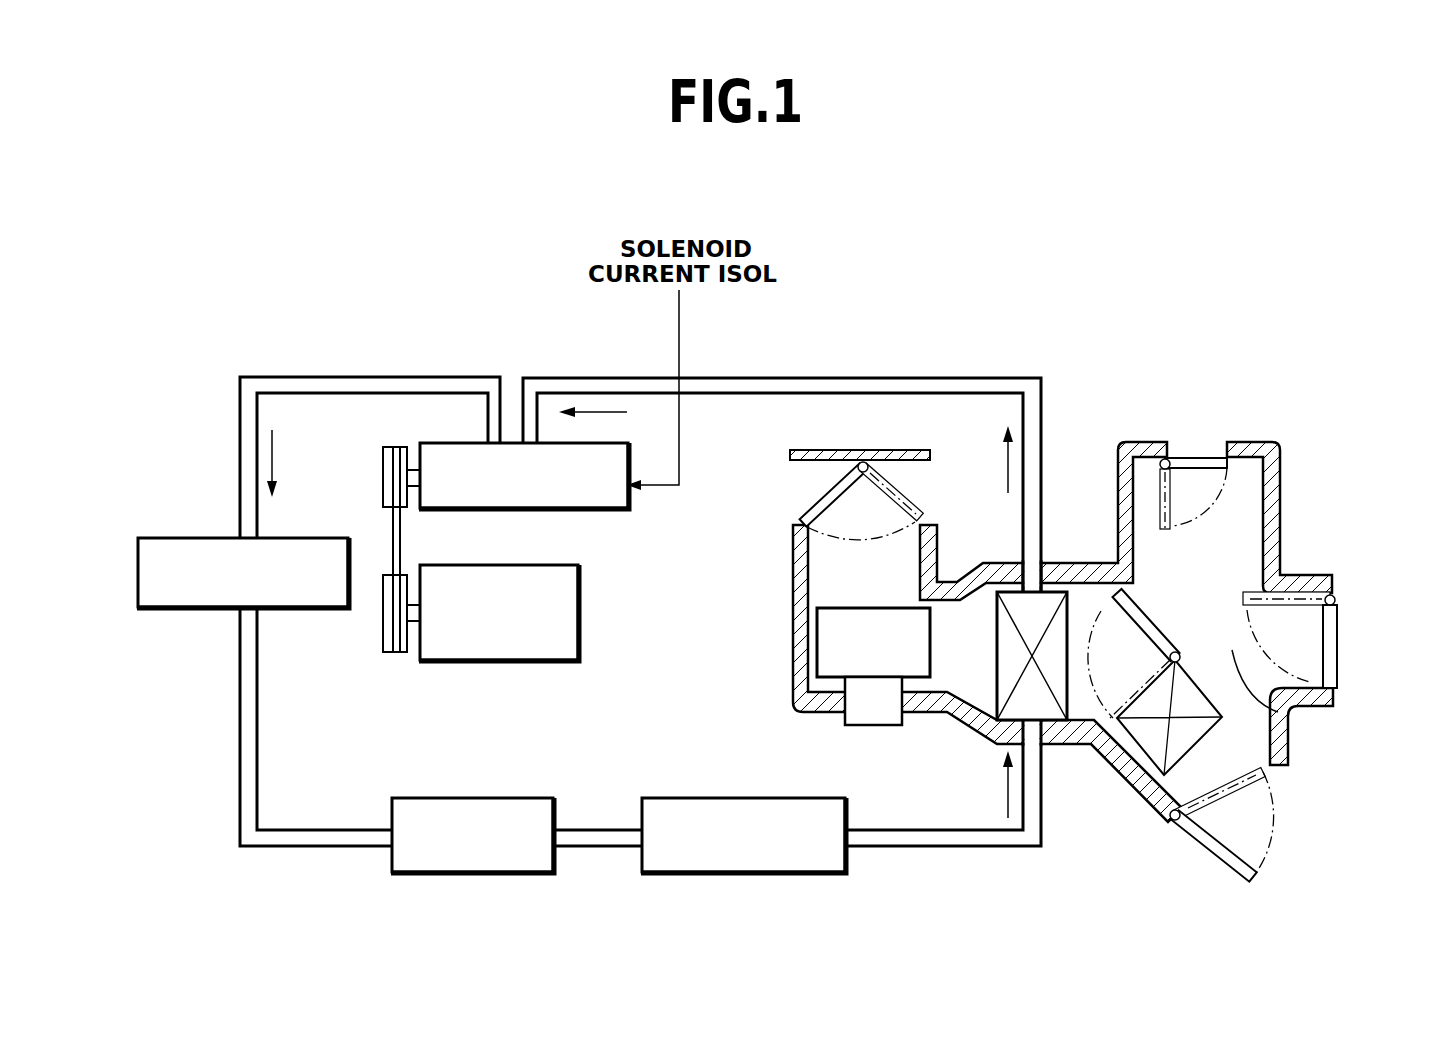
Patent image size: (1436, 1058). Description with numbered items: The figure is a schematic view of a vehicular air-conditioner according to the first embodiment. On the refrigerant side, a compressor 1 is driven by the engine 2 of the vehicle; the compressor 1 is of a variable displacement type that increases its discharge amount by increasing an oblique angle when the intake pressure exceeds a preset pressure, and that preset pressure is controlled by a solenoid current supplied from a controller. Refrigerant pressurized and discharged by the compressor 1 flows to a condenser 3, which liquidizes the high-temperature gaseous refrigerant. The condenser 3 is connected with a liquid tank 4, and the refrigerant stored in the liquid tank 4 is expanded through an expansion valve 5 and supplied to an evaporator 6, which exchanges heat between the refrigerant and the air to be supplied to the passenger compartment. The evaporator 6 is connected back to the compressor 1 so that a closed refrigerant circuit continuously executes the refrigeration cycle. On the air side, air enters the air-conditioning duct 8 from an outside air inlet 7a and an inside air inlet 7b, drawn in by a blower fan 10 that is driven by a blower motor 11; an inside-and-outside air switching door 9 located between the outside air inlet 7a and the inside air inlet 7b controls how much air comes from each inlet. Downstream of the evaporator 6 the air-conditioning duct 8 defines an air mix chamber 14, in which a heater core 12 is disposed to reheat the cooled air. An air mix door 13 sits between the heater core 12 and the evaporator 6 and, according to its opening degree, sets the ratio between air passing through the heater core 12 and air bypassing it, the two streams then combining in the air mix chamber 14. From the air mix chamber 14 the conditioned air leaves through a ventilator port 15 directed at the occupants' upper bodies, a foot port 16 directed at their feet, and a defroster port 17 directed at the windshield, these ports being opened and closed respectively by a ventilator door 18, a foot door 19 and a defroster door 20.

The compressor 1 is at (629, 466).
The engine 2 is at (579, 625).
The condenser 3 is at (163, 609).
The liquid tank 4 is at (505, 874).
The expansion valve 5 is at (745, 874).
The evaporator 6 is at (1048, 603).
The outside air inlet 7a is at (905, 487).
The inside air inlet 7b is at (800, 487).
The air-conditioning duct 8 is at (793, 650).
The inside-and-outside air switching door 9 is at (795, 505).
The blower fan 10 is at (918, 668).
The blower motor 11 is at (862, 716).
The heater core 12 is at (1150, 745).
The air mix door 13 is at (1150, 627).
The air mix chamber 14 is at (1295, 723).
The ventilator port 15 is at (1337, 600).
The foot port 16 is at (1275, 802).
The defroster port 17 is at (1188, 442).
The ventilator door 18 is at (1338, 650).
The foot door 19 is at (1215, 855).
The defroster door 20 is at (1203, 460).